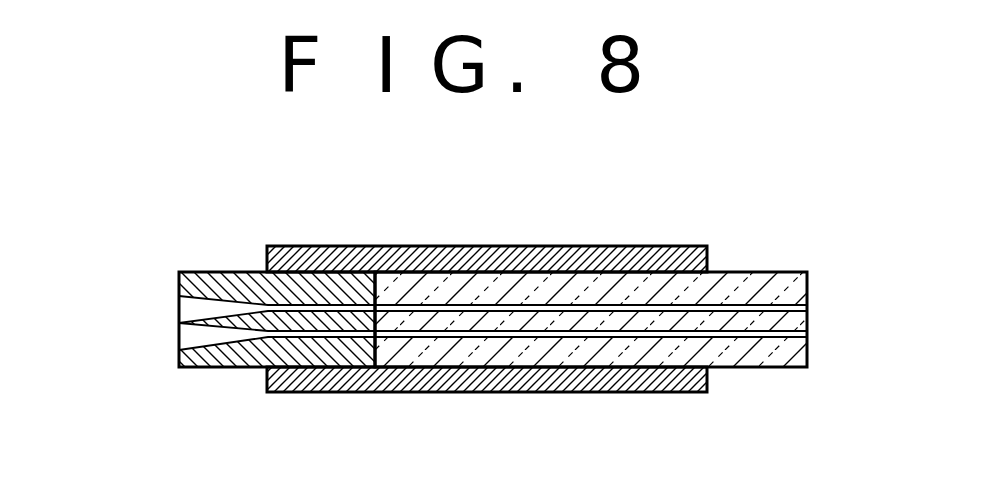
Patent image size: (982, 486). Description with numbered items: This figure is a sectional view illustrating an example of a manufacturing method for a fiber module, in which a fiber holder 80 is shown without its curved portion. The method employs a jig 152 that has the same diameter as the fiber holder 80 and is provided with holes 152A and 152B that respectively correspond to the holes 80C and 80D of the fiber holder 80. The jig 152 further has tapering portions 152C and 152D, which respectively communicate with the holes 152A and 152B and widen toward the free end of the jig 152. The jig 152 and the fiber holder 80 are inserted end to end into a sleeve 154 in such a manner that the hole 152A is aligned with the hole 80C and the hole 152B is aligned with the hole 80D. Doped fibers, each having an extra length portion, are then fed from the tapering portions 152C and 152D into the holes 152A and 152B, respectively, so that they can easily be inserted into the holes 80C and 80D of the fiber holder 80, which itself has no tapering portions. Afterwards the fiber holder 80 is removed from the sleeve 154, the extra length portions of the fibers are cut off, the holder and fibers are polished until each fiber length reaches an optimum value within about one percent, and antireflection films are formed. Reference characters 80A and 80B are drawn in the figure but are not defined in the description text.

The fiber holder 80 is at (735, 200).
The first cladding of waveguide member 80A is at (392, 362).
The second cladding of waveguide member 80B is at (793, 360).
The hole 80C is at (802, 302).
The hole 80D is at (802, 330).
The jig 152 is at (190, 400).
The hole 152A is at (303, 305).
The hole 152B is at (303, 337).
The tapering portion 152C is at (178, 310).
The tapering portion 152D is at (178, 343).
The sleeve 154 is at (495, 247).